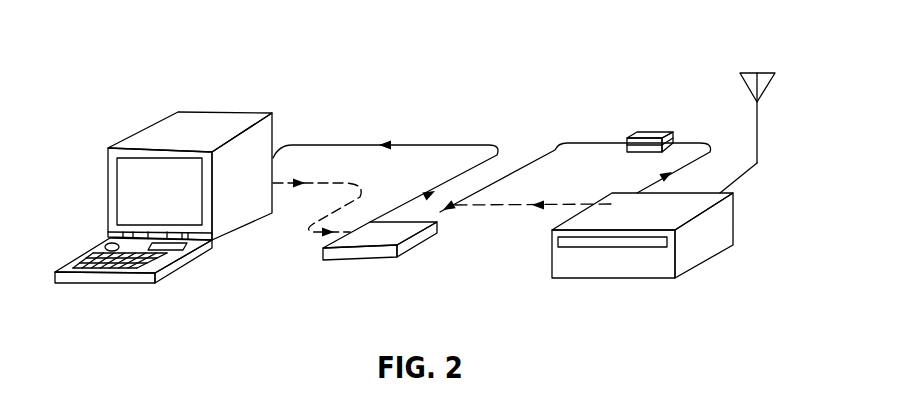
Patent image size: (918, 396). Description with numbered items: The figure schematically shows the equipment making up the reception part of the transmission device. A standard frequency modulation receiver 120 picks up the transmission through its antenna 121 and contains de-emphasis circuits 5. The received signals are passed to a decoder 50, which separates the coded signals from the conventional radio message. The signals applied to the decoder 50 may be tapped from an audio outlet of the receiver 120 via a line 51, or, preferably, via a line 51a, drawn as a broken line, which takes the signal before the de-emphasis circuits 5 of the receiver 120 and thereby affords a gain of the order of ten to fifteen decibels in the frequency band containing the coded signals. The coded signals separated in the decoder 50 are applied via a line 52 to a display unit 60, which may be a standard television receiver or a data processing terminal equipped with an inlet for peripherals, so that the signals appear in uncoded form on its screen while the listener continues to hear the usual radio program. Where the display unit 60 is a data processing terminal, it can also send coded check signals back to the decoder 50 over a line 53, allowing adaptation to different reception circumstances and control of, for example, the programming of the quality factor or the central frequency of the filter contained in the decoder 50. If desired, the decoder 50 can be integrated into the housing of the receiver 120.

The display unit 60 is at (107, 185).
The line 52 is at (400, 143).
The line 53 is at (306, 228).
The decoder 50 is at (367, 255).
The line 51 is at (583, 142).
The line 51a is at (513, 206).
The de-emphasis circuits 5 is at (658, 130).
The antenna 121 is at (758, 137).
The frequency modulation receiver 120 is at (702, 252).